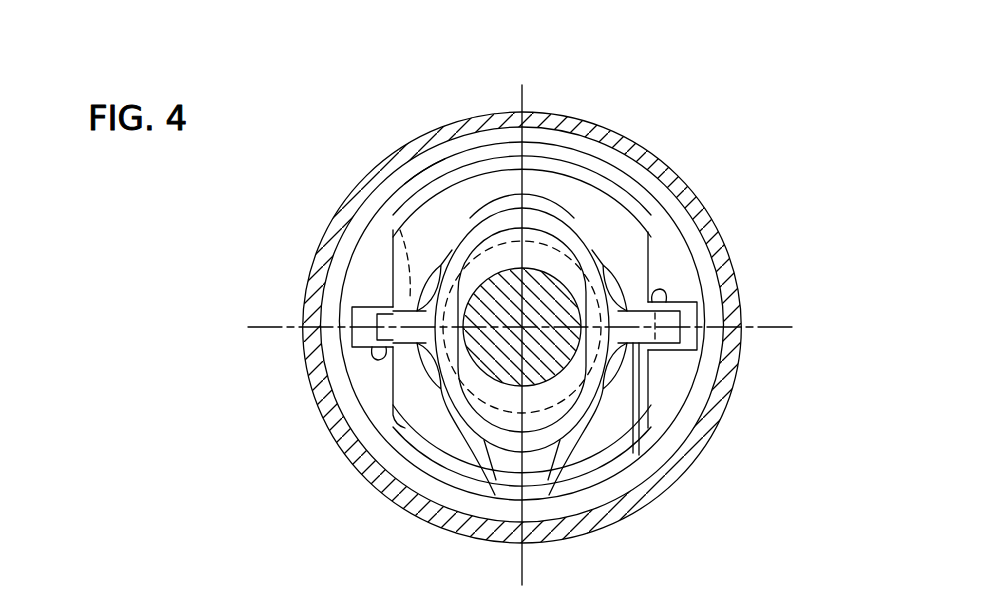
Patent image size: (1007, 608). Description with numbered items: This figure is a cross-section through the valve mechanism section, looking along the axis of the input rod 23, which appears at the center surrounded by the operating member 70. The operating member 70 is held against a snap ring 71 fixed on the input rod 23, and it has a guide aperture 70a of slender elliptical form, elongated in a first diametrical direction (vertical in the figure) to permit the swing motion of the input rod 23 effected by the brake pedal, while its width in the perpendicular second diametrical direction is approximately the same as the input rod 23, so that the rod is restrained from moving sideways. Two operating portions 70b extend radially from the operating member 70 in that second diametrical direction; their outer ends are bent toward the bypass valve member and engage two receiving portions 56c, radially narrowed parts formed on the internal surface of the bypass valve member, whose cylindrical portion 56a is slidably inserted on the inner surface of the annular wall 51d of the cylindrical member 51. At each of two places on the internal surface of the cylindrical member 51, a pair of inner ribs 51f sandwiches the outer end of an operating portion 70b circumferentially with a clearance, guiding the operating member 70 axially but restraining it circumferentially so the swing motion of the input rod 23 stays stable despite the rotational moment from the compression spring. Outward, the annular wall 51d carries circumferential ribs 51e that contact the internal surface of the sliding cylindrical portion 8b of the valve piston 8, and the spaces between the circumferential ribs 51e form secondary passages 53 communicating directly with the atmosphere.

The valve piston 8 is at (674, 162).
The sliding cylindrical portion 8b is at (400, 148).
The input rod 23 is at (506, 378).
The cylindrical member 51 is at (546, 134).
The annular wall 51d is at (473, 508).
The circumferential ribs 51e is at (377, 187).
The inner ribs 51f is at (715, 290).
The secondary passages 53 is at (611, 492).
The cylindrical portion 56a is at (552, 488).
The receiving portions 56c is at (390, 287).
The operating member 70 is at (548, 200).
The guide aperture 70a is at (505, 236).
The operating portions 70b is at (375, 217).
The snap ring 71 is at (445, 398).